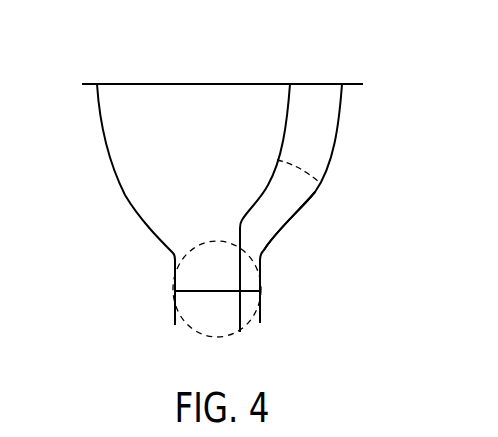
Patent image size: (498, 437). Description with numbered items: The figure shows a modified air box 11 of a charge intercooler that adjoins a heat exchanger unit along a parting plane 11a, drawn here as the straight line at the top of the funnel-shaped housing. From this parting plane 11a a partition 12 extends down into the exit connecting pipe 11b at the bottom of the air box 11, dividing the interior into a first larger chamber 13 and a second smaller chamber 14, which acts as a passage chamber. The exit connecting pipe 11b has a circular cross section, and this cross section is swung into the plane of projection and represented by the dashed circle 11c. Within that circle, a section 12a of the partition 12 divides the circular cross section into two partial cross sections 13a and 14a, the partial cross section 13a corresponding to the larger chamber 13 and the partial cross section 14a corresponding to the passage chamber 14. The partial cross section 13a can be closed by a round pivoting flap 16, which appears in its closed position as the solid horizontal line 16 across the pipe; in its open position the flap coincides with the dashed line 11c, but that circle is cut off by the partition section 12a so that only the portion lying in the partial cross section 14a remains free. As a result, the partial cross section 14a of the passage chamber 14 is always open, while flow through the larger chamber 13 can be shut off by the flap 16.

The air box 11 is at (98, 180).
The parting plane 11a is at (185, 84).
The exit connecting pipe 11b is at (264, 312).
The dashed line (circular cross section / open flap position) 11c is at (179, 273).
The partition 12 is at (322, 184).
The partition section 12a is at (241, 283).
The first larger chamber 13 is at (204, 156).
The partial cross section 13a is at (228, 328).
The second smaller chamber (passage chamber) 14 is at (278, 217).
The partial cross section 14a is at (260, 312).
The round pivoting flap 16 is at (175, 309).